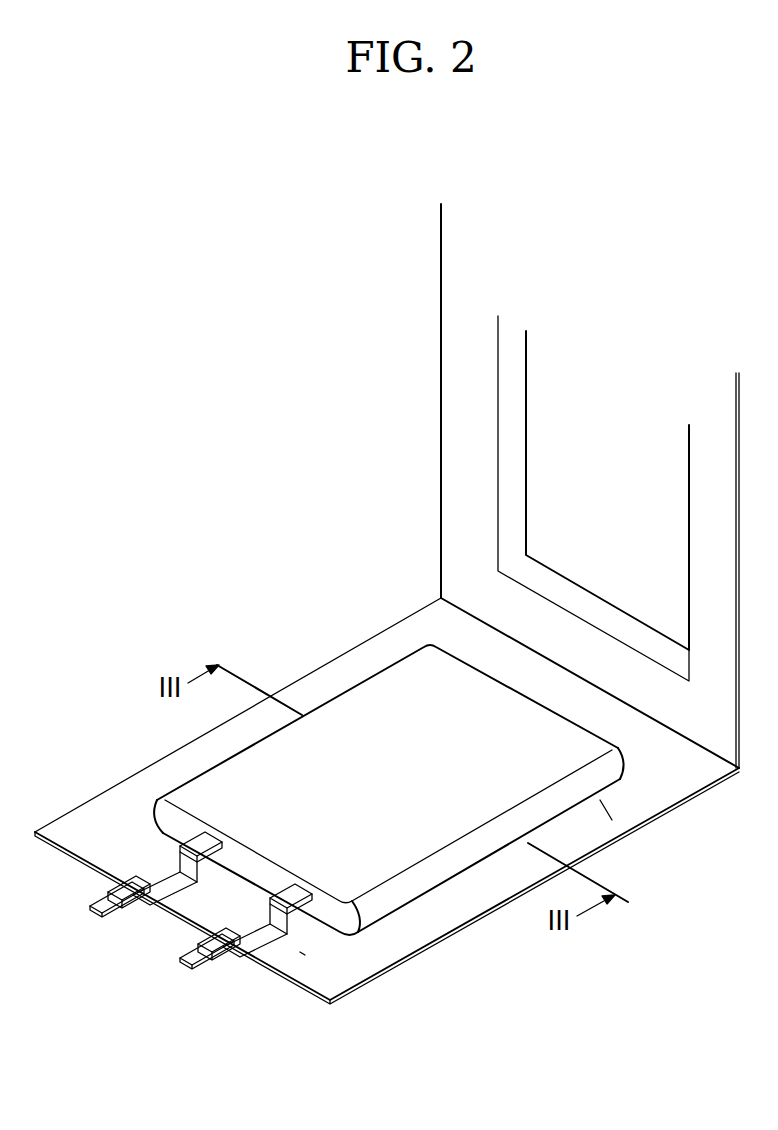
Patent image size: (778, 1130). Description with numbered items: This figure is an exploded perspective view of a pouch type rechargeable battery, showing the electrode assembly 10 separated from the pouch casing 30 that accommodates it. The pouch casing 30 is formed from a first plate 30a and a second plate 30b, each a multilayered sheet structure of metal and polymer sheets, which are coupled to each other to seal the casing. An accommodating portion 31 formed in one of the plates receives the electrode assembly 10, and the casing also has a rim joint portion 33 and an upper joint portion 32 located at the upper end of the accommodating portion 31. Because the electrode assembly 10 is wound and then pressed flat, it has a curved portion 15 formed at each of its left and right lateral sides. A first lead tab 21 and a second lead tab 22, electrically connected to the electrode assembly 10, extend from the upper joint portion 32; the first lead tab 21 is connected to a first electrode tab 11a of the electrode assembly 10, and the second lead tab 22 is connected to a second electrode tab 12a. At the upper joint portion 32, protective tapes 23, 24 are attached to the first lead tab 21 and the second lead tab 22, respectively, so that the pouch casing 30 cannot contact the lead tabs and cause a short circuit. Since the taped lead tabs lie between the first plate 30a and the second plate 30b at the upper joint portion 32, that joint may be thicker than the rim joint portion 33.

The electrode assembly 10 is at (358, 754).
The first electrode tab 11a is at (217, 912).
The second electrode tab 12a is at (160, 850).
The curved portion 15 is at (154, 800).
The first lead tab 21 is at (186, 958).
The second lead tab 22 is at (94, 906).
The protective tape 23 is at (232, 956).
The protective tape 24 is at (116, 883).
The pouch casing 30 is at (387, 643).
The first plate 30a is at (441, 386).
The second plate 30b is at (303, 670).
The accommodating portion 31 is at (560, 468).
The upper joint portion 32 is at (300, 952).
The rim joint portion 33 is at (612, 820).